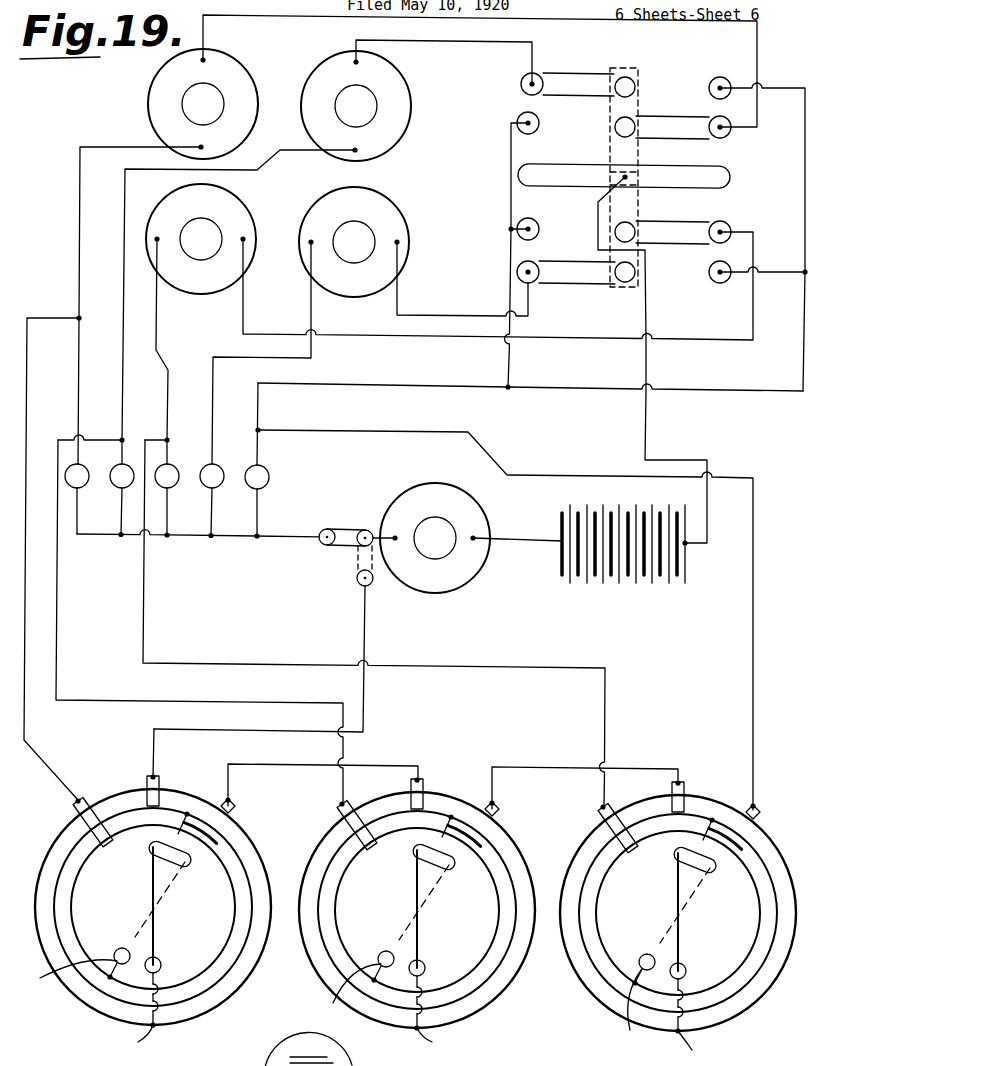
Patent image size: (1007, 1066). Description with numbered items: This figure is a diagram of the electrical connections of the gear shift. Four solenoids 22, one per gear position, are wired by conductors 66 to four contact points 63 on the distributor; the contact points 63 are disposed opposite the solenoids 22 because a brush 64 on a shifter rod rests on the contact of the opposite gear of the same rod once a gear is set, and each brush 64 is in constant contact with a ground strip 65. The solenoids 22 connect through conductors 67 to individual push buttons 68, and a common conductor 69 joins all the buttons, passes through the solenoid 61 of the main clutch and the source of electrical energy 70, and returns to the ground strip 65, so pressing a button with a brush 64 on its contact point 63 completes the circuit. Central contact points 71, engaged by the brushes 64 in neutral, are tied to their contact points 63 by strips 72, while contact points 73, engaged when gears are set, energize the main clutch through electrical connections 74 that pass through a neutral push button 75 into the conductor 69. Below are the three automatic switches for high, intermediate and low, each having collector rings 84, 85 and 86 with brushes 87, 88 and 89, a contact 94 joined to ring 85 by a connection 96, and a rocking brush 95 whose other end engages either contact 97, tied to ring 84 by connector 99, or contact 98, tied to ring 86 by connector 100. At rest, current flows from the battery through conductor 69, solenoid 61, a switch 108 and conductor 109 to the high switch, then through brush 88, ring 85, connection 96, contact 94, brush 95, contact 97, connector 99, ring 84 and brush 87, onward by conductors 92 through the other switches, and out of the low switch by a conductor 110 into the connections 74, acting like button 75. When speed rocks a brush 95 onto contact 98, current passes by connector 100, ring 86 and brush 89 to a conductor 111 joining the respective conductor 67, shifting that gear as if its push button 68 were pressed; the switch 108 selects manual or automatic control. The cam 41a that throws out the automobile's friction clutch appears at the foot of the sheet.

The solenoid 22 is at (278, 173).
The solenoid of the main clutch 61 is at (407, 480).
The contact points 63 is at (521, 84).
The brush 64 is at (610, 143).
The ground strip 65 is at (688, 172).
The conductors 66 is at (316, 30).
The conductors 67 is at (123, 388).
The push buttons 68 is at (117, 483).
The common conductor 69 is at (285, 553).
The source of electrical energy 70 is at (560, 557).
The contact points 71 is at (635, 90).
The strips 72 is at (585, 73).
The contact points 73 is at (520, 110).
The electrical connections 74 is at (508, 185).
The push button 75 is at (270, 480).
The collector ring 84 is at (207, 797).
The collector ring 85 is at (133, 800).
The collector ring 86 is at (92, 853).
The brush 87 is at (236, 812).
The brush 88 is at (160, 775).
The brush 89 is at (83, 802).
The conductors 92 is at (413, 767).
The contact 94 is at (145, 848).
The brush 95 is at (153, 880).
The connection 96 is at (208, 838).
The contact 97 is at (158, 960).
The contact 98 is at (122, 948).
The connector 99 is at (423, 1045).
The connector 100 is at (330, 1009).
The switch 108 is at (343, 543).
The conductor 109 is at (368, 625).
The conductor 110 is at (753, 623).
The conductor 111 is at (50, 767).
The cam 41a is at (276, 1049).